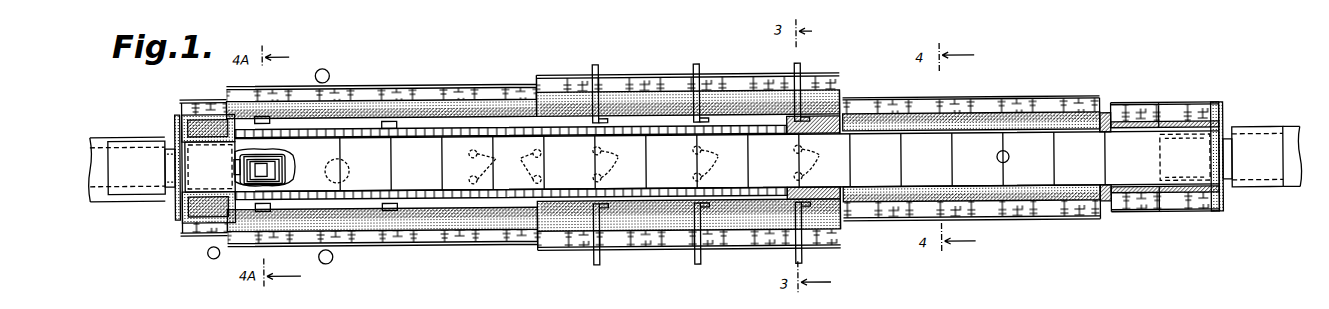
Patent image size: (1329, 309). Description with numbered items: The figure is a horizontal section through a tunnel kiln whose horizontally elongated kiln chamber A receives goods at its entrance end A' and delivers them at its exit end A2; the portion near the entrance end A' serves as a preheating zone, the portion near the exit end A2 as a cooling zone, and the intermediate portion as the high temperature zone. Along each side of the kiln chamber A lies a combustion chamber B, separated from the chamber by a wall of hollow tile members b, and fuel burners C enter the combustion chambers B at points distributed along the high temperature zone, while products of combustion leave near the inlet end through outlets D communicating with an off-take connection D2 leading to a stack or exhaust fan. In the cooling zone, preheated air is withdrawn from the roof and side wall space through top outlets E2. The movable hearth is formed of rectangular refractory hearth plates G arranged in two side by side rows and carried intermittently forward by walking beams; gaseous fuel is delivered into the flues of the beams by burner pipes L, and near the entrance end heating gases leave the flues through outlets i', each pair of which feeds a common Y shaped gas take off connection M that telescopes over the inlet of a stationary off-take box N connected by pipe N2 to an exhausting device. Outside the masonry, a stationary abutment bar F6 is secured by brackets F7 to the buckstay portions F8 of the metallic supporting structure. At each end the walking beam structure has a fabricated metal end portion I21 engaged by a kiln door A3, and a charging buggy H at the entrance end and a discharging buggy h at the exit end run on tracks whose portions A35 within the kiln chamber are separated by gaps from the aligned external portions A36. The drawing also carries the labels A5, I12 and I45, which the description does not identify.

The kiln chamber A is at (700, 141).
The charging buggy H is at (115, 147).
The left end hub A5 is at (169, 169).
The fabricated metal end portion I21 is at (166, 156).
The external track portions A36 is at (172, 197).
The internal track portions A35 is at (697, 163).
The entrance end A' is at (246, 138).
The outer stationary abutment bar F6 is at (387, 83).
The brackets F7 is at (560, 78).
The combustion chamber B is at (410, 122).
The hollow tile members b is at (429, 134).
The outlets D is at (261, 113).
The off-take connection D2 is at (345, 98).
The buckstay portions F8 is at (582, 78).
The fuel burners C is at (597, 64).
The burner pipes L is at (711, 163).
The inspection port I12 is at (505, 166).
The hearth plates G is at (552, 182).
The pipe N2 is at (232, 160).
The gas take off connection M is at (275, 158).
The off-take box N is at (275, 166).
The heating gas outlets i' is at (302, 171).
The top outlets E2 is at (1009, 157).
The exit end A2 is at (1152, 103).
The right compartment fitting I45 is at (1163, 152).
The discharging buggy h is at (1260, 140).
The kiln doors A3 is at (1225, 152).